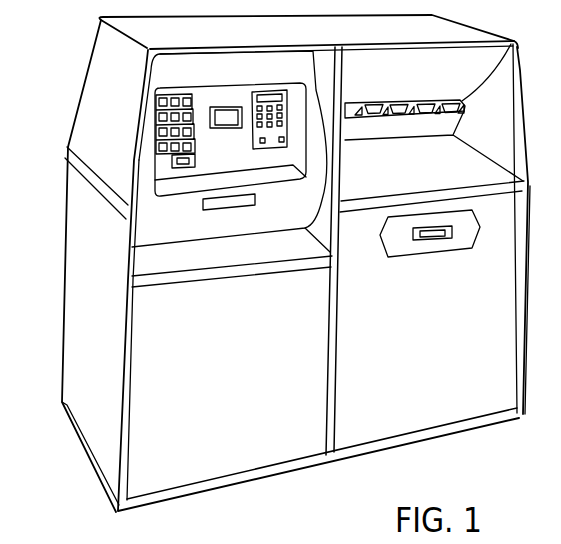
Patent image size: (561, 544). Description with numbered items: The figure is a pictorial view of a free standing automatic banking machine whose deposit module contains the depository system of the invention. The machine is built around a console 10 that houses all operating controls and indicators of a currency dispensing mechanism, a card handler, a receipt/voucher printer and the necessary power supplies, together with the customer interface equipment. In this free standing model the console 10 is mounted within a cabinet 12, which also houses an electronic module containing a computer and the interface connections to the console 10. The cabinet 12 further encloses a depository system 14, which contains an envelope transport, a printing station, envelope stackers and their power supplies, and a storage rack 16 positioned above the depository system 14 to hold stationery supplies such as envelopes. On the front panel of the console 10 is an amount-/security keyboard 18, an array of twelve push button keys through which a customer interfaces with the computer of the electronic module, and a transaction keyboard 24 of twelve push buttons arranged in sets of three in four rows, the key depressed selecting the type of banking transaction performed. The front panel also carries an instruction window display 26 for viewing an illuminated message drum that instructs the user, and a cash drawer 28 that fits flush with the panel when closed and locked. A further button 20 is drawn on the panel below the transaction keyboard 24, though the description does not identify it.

The console 10 is at (222, 217).
The cabinet 12 is at (453, 29).
The depository system 14 is at (437, 233).
The storage rack 16 is at (402, 126).
The amount-/security keyboard 18 is at (268, 92).
The push button 20 is at (182, 165).
The transaction keyboard 24 is at (188, 95).
The instruction window display 26 is at (228, 122).
The cash drawer 28 is at (255, 200).